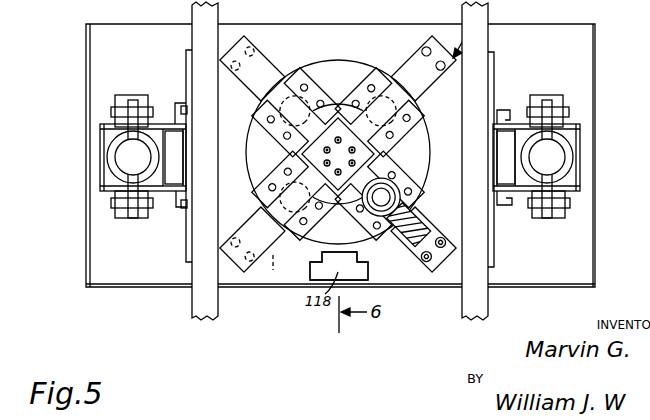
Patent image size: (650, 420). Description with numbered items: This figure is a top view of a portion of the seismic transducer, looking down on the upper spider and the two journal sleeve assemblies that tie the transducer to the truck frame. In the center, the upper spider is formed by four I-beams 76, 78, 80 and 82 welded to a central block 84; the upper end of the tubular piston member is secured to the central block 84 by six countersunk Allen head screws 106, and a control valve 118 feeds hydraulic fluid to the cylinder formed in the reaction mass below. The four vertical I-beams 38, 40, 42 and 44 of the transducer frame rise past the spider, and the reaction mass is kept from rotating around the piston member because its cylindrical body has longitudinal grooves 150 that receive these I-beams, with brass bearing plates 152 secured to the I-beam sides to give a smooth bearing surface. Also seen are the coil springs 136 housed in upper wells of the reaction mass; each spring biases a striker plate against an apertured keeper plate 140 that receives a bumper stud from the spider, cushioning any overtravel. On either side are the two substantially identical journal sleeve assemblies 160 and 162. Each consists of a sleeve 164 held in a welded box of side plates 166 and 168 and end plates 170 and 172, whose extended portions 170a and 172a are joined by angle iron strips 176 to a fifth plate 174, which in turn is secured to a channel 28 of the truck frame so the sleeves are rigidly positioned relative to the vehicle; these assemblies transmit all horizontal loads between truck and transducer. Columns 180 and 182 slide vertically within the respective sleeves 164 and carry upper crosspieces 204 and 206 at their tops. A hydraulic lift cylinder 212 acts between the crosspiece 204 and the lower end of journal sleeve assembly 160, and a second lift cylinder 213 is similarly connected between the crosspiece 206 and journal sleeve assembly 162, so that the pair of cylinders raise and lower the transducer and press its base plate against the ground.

The channel 28 is at (192, 13).
The fifth plate 174 is at (186, 57).
The journal sleeve assembly 160 is at (98, 152).
The journal sleeve assembly 162 is at (582, 146).
The sleeve 164 is at (116, 170).
The side plate 166 is at (100, 131).
The side plate 168 is at (178, 156).
The end plate 170 is at (112, 190).
The extended portion 170a is at (174, 190).
The end plate 172 is at (114, 122).
The extended portion 172a is at (173, 122).
The angle iron strip 176 is at (180, 124).
The column 180 is at (128, 157).
The column 182 is at (556, 153).
The hydraulic lift cylinder 212 is at (125, 95).
The lift cylinder 213 is at (558, 99).
The upper crosspiece 204 is at (130, 218).
The upper crosspiece 206 is at (548, 218).
The keeper plate 140 is at (346, 208).
The coil spring 136 is at (412, 175).
The I-beam 80 is at (292, 64).
The I-beam 82 is at (432, 44).
The I-beam 76 is at (245, 240).
The I-beam 40 is at (410, 258).
The I-beam 42 is at (282, 72).
The central block 84 is at (300, 142).
The I-beam 44 is at (408, 62).
The groove 150 is at (262, 112).
The I-beam 38 is at (303, 234).
The I-beam 78 is at (390, 170).
The brass bearing plate 152 is at (422, 208).
The Allen head screw 106 is at (338, 140).
The control valve 118 is at (338, 272).